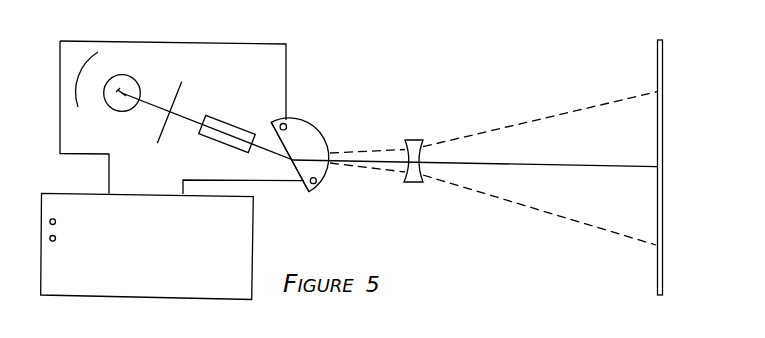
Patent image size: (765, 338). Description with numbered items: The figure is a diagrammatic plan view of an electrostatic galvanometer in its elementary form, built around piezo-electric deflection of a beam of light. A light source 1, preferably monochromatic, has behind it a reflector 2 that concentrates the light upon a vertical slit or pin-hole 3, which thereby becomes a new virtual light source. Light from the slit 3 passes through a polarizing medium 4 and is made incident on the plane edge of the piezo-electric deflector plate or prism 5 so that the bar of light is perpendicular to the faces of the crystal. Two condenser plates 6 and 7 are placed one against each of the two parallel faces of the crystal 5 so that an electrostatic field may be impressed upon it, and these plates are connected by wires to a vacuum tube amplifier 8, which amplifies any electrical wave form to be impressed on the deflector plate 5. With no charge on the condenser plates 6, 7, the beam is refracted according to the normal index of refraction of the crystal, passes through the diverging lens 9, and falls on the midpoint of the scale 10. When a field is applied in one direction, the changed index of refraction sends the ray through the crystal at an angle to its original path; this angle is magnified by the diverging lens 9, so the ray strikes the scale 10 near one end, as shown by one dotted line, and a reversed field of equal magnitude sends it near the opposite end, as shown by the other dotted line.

The light source 1 is at (141, 79).
The reflector 2 is at (77, 82).
The vertical slit or pin-hole 3 is at (179, 108).
The polarizing medium 4 is at (248, 131).
The piezo-electric deflector plate or prism 5 is at (334, 152).
The condenser plate 6 is at (306, 134).
The condenser plate 7 is at (316, 192).
The vacuum tube amplifier 8 is at (147, 246).
The diverging lens 9 is at (417, 140).
The scale 10 is at (656, 148).